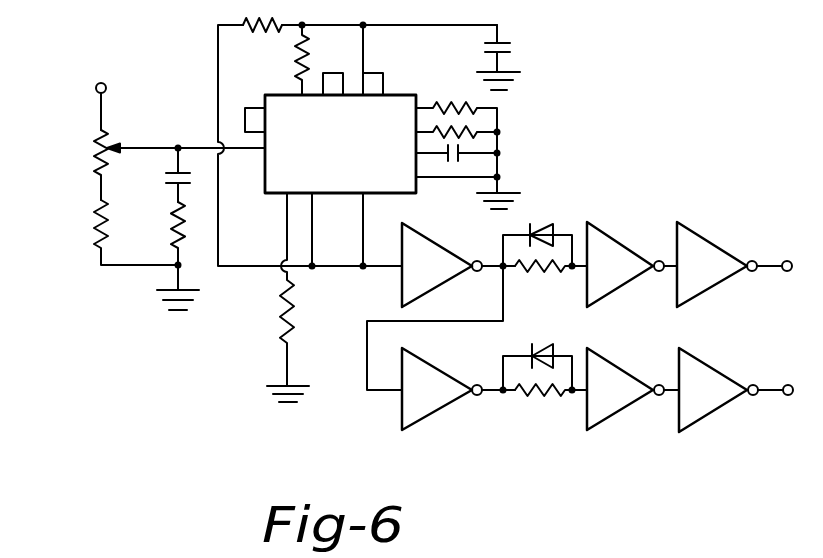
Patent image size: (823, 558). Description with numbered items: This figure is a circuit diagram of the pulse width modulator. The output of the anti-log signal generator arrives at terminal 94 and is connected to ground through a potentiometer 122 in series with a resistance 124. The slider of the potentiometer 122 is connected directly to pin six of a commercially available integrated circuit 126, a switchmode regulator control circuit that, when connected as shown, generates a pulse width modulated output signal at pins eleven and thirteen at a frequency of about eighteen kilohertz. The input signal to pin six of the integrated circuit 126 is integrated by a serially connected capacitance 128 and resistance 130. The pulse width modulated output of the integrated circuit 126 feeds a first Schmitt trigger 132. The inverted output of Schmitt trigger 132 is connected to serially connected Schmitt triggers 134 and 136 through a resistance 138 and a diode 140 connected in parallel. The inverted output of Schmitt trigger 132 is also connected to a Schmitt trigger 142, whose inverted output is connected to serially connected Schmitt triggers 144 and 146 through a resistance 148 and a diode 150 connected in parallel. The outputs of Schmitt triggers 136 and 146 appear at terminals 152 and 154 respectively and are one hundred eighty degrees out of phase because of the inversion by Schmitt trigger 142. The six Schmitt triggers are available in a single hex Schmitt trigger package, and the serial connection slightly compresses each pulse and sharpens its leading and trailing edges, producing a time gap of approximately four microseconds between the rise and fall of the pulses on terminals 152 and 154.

The terminal 94 is at (103, 82).
The potentiometer 122 is at (94, 152).
The resistance 124 is at (96, 230).
The integrated circuit 126 is at (397, 95).
The capacitance 128 is at (170, 170).
The resistance 130 is at (175, 232).
The first Schmitt trigger 132 is at (438, 243).
The Schmitt trigger 134 is at (608, 236).
The Schmitt trigger 136 is at (705, 240).
The resistance 138 is at (519, 271).
The diode 140 is at (538, 223).
The Schmitt trigger 142 is at (428, 365).
The Schmitt trigger 144 is at (611, 334).
The Schmitt trigger 146 is at (715, 370).
The resistance 148 is at (539, 400).
The diode 150 is at (555, 323).
The terminal 152 is at (783, 272).
The terminal 154 is at (786, 397).